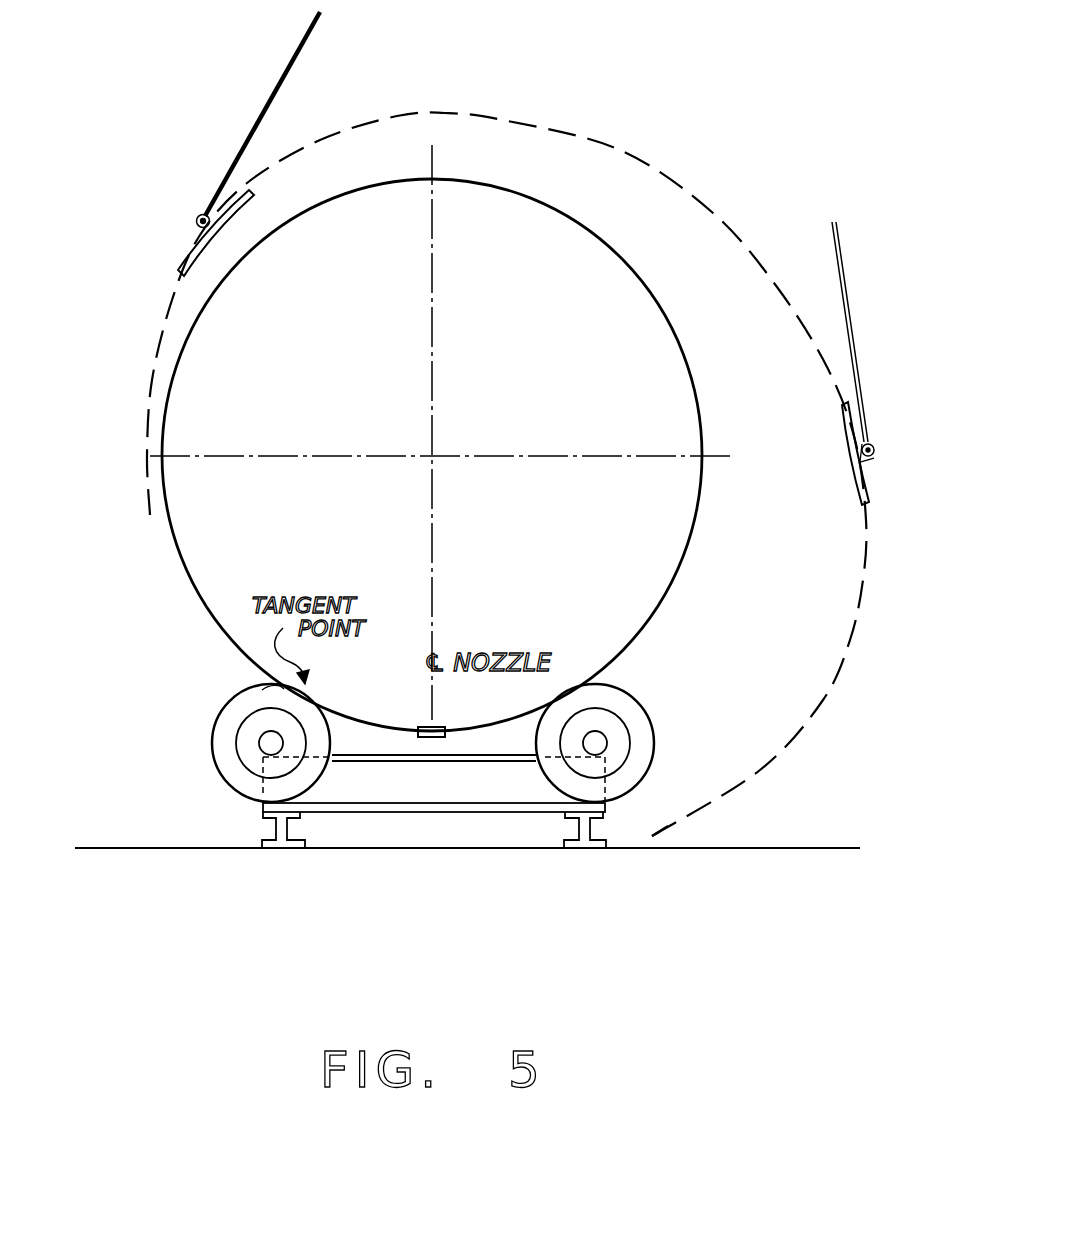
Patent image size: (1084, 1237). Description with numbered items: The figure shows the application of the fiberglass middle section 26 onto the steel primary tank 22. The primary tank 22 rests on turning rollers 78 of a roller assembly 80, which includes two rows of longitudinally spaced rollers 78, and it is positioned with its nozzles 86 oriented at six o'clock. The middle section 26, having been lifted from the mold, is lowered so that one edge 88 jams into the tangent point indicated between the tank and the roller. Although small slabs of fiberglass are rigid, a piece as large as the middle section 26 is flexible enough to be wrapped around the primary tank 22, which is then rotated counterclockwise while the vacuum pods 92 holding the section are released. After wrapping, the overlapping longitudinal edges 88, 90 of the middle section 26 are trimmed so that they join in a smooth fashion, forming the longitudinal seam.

The primary tank 22 is at (662, 613).
The middle section 26 is at (704, 213).
The vacuum pods 92 is at (196, 238).
The turning rollers 78 is at (214, 748).
The edge 88 is at (282, 689).
The nozzles 86 is at (446, 734).
The roller assembly 80 is at (353, 812).
The edge 90 is at (660, 830).